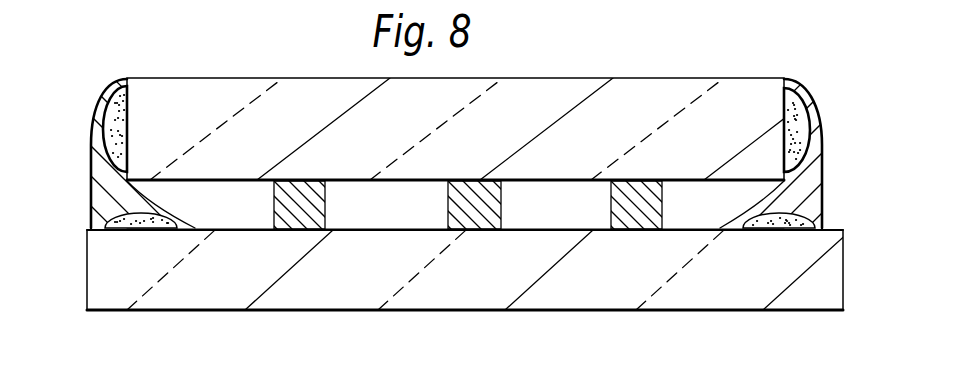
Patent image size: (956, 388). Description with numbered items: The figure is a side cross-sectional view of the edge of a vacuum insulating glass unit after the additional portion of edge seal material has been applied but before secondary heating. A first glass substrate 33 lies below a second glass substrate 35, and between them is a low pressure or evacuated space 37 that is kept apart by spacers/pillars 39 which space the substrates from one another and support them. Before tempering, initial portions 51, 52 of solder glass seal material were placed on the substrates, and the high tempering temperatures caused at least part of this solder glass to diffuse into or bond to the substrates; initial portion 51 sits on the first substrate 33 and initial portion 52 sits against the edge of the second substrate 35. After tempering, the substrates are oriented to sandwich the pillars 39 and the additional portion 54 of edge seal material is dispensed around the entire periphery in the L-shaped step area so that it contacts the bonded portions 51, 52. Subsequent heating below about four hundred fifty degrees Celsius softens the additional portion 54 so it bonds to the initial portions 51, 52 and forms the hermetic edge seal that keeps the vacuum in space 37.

The first glass substrate 33 is at (455, 293).
The second glass substrate 35 is at (320, 93).
The low pressure or evacuated space 37 is at (370, 208).
The spacers/pillars 39 is at (277, 217).
The initial portion of edge seal material 51 is at (125, 229).
The initial portion of edge seal material 52 is at (94, 98).
The additional portion of edge seal material 54 is at (100, 167).